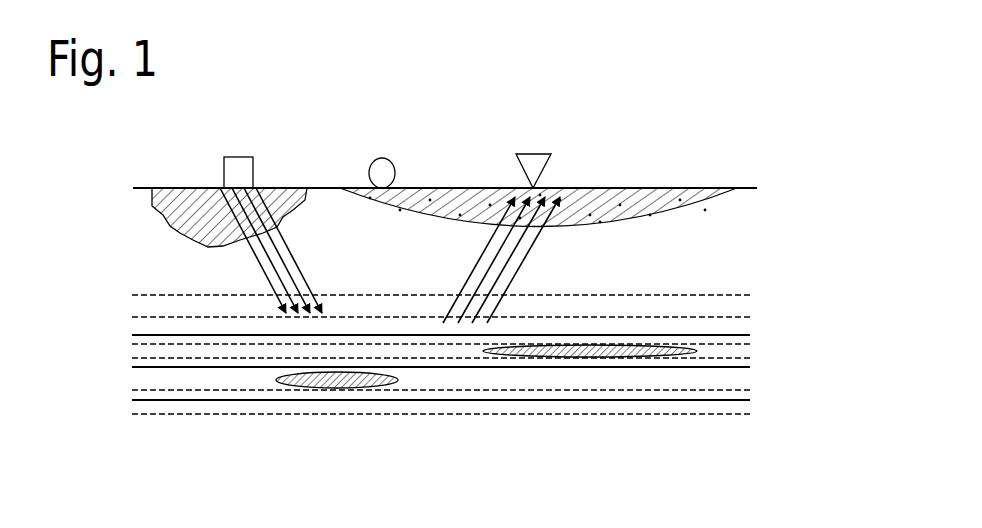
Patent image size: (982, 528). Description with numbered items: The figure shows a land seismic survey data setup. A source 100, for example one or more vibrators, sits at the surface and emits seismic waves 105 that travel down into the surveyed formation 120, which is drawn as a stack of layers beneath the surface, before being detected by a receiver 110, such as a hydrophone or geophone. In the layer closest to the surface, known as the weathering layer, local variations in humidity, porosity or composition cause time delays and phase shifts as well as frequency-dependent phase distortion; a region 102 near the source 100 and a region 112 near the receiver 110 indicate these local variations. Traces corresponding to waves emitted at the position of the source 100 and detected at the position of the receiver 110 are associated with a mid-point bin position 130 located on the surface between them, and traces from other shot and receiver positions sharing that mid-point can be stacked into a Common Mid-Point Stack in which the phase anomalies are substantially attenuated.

The source 100 is at (241, 157).
The region 102 is at (170, 227).
The seismic waves 105 is at (302, 262).
The receiver 110 is at (548, 152).
The region 112 is at (703, 207).
The surveyed formation 120 is at (765, 288).
The mid-point bin position 130 is at (385, 158).